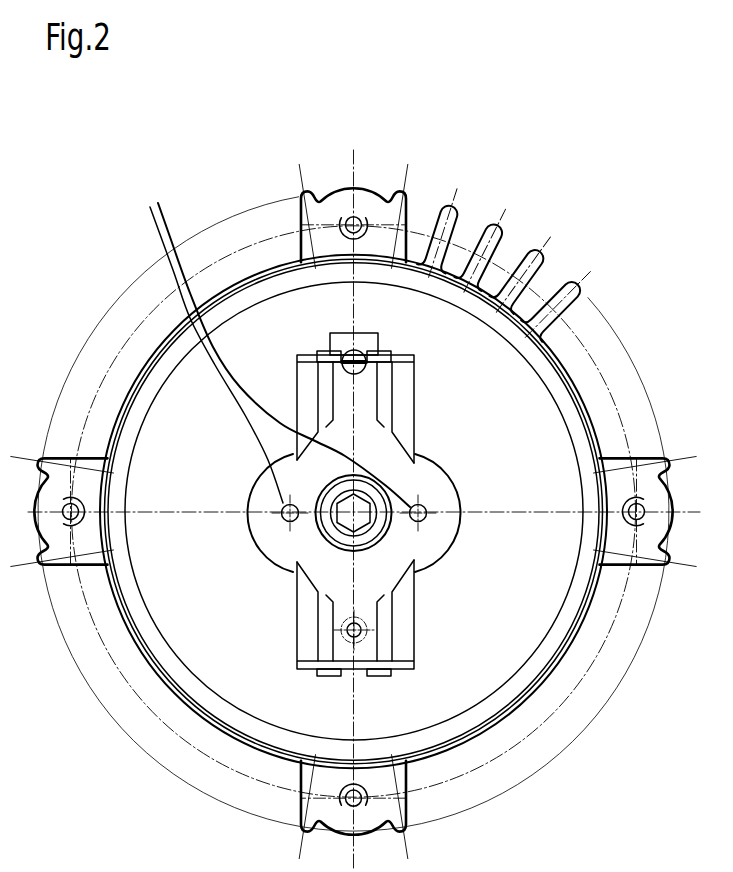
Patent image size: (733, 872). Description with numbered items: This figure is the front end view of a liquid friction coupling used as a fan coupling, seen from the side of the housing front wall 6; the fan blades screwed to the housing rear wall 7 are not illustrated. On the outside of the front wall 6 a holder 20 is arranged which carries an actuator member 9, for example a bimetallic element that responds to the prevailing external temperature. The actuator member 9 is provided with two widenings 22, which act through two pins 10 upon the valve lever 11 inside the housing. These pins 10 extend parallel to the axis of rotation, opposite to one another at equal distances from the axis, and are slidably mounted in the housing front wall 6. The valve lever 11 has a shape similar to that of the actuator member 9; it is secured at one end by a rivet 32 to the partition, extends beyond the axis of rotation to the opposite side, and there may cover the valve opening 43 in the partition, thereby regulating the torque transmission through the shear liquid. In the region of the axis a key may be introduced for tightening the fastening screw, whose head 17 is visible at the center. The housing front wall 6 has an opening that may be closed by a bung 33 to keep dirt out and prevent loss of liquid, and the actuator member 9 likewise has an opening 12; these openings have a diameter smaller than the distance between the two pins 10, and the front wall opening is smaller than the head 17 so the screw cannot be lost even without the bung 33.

The housing front wall 6 is at (553, 445).
The housing rear wall 7 is at (587, 320).
The actuator member 9 is at (398, 458).
The pins 10 is at (273, 343).
The valve lever 11 is at (363, 343).
The opening 12 is at (342, 535).
The head 17 is at (369, 530).
The holder 20 is at (305, 377).
The widenings 22 is at (283, 543).
The rivet 32 is at (378, 636).
The bung 33 is at (305, 573).
The valve opening 43 is at (348, 352).